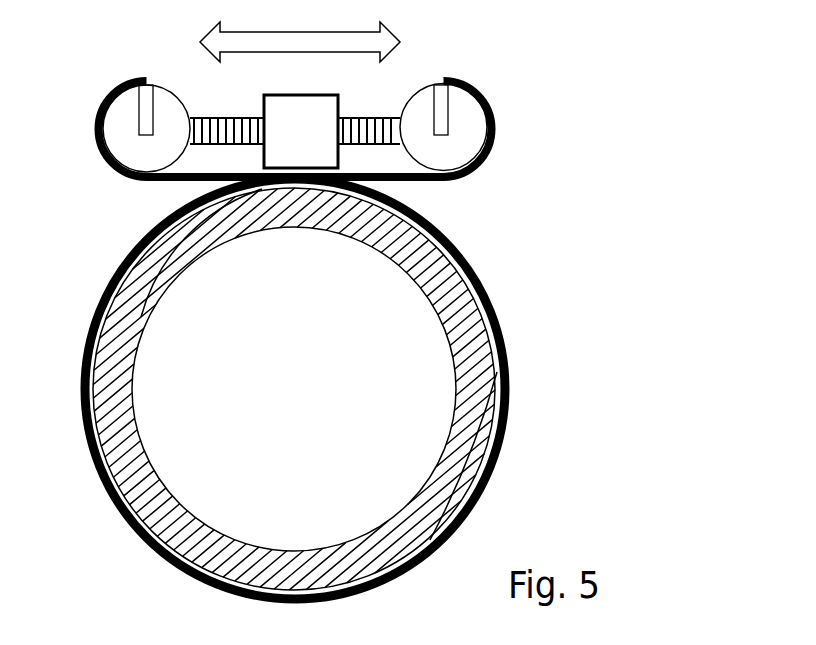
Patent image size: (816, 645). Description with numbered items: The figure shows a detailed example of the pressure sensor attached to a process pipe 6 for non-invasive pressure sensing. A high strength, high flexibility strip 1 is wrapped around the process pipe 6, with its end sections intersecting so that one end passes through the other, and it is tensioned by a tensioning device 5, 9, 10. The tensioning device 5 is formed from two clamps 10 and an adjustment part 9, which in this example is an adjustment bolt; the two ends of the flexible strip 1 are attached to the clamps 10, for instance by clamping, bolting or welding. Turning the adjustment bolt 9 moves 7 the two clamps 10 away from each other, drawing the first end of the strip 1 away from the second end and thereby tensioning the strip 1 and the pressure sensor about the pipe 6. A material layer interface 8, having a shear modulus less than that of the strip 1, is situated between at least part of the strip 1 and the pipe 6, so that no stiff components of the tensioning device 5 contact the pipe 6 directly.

The flexible strip 1 is at (177, 183).
The tensioning device 5 is at (497, 125).
The process pipe 6 is at (141, 309).
The movement of the first end of the flexible strip 7 is at (300, 31).
The material layer interface 8 is at (497, 371).
The adjustment part 9 is at (301, 113).
The clamps 10 is at (295, 105).